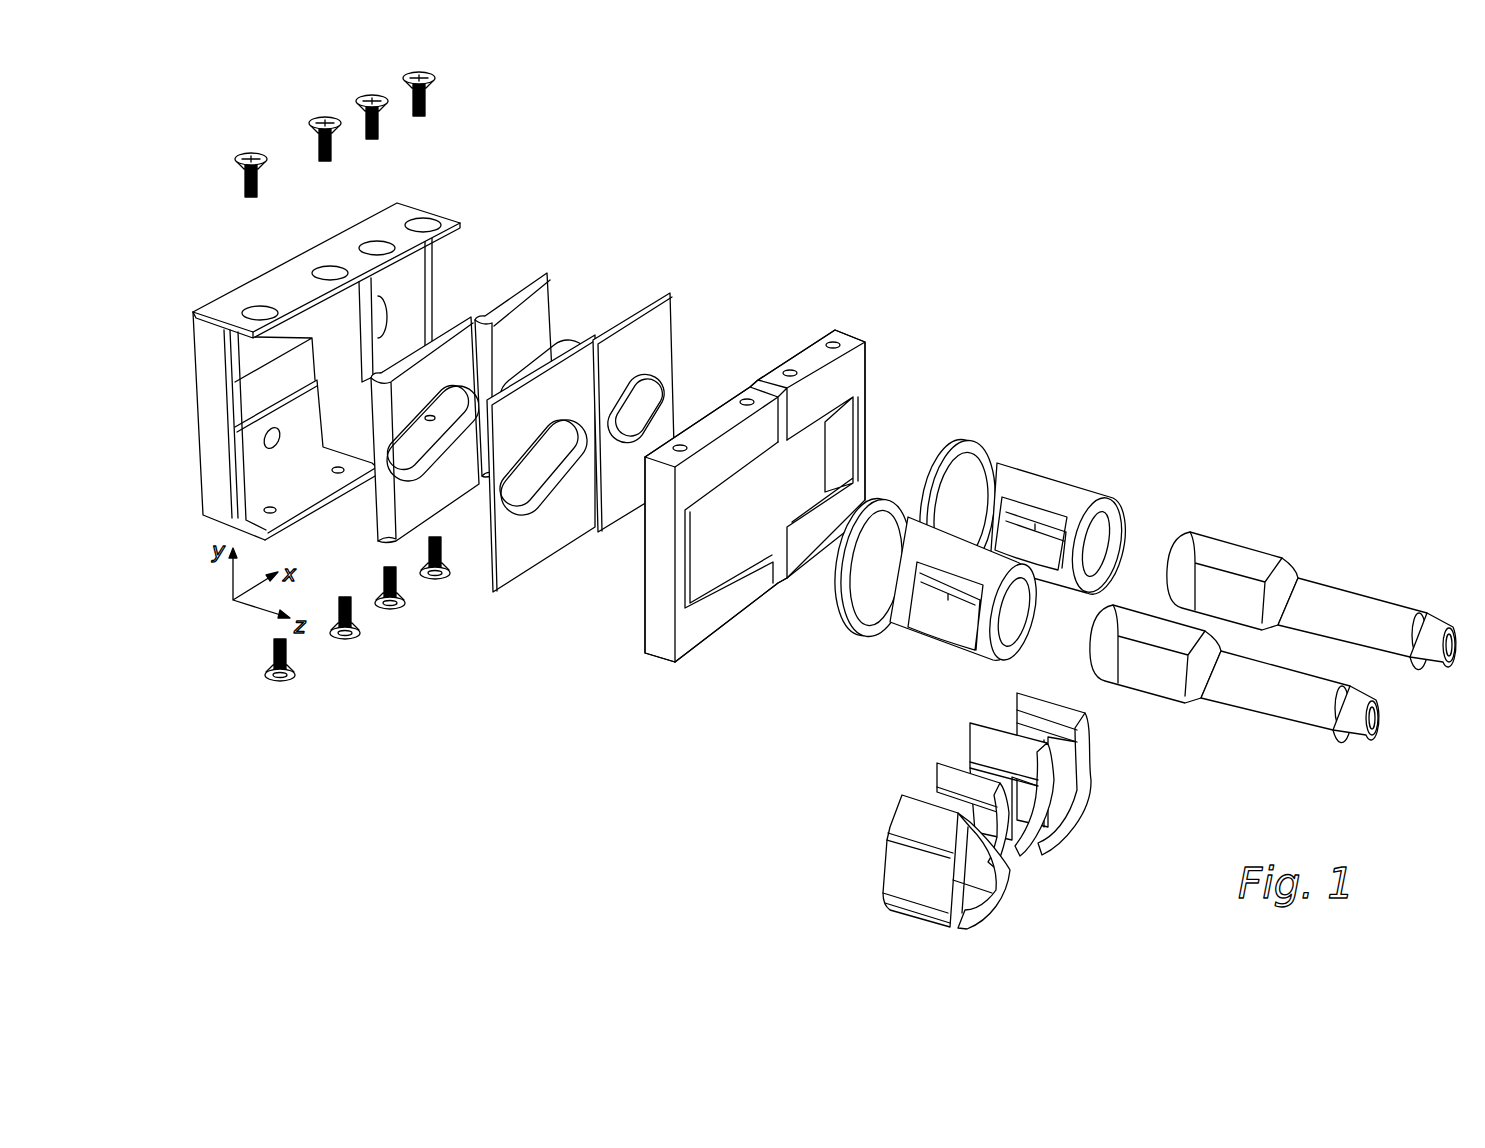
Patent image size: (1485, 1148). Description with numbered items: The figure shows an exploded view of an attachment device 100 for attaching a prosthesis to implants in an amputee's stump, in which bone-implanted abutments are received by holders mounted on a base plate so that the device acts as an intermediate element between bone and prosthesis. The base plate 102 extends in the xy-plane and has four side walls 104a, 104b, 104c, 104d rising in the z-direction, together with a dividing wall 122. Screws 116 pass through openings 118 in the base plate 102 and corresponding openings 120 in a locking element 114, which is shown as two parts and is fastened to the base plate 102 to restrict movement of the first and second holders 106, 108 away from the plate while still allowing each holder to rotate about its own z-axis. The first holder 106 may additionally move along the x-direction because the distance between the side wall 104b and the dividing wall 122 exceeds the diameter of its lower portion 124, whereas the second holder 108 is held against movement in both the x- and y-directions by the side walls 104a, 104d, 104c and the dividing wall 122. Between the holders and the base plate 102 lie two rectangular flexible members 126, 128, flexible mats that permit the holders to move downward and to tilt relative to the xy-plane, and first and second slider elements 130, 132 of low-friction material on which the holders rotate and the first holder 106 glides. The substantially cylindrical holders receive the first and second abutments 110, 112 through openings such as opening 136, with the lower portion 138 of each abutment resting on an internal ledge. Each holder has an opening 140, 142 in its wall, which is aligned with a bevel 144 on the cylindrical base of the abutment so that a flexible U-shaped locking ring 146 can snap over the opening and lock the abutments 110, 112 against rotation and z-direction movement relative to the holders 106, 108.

The attachment device 100 is at (1138, 341).
The base plate 102 is at (334, 352).
The side wall 104a is at (290, 300).
The side wall 104b is at (222, 413).
The side wall 104c is at (285, 497).
The side wall 104d is at (432, 277).
The first holder 106 is at (978, 575).
The second holder 108 is at (1282, 597).
The first abutment 110 is at (1287, 708).
The second abutment 112 is at (1372, 610).
The locking element 114 is at (814, 470).
The screws 116 is at (382, 135).
The openings 118 is at (377, 248).
The openings 120 is at (790, 370).
The dividing wall 122 is at (343, 337).
The lower portion 124 is at (838, 593).
The flexible member 126 is at (398, 513).
The flexible member 128 is at (537, 318).
The first slider element 130 is at (520, 558).
The second slider element 132 is at (655, 320).
The opening 136 is at (1097, 560).
The lower portion 138 is at (1242, 555).
The opening 140 is at (1070, 495).
The opening 142 is at (886, 608).
The bevel 144 is at (1158, 682).
The U-shaped locking ring 146 is at (902, 873).